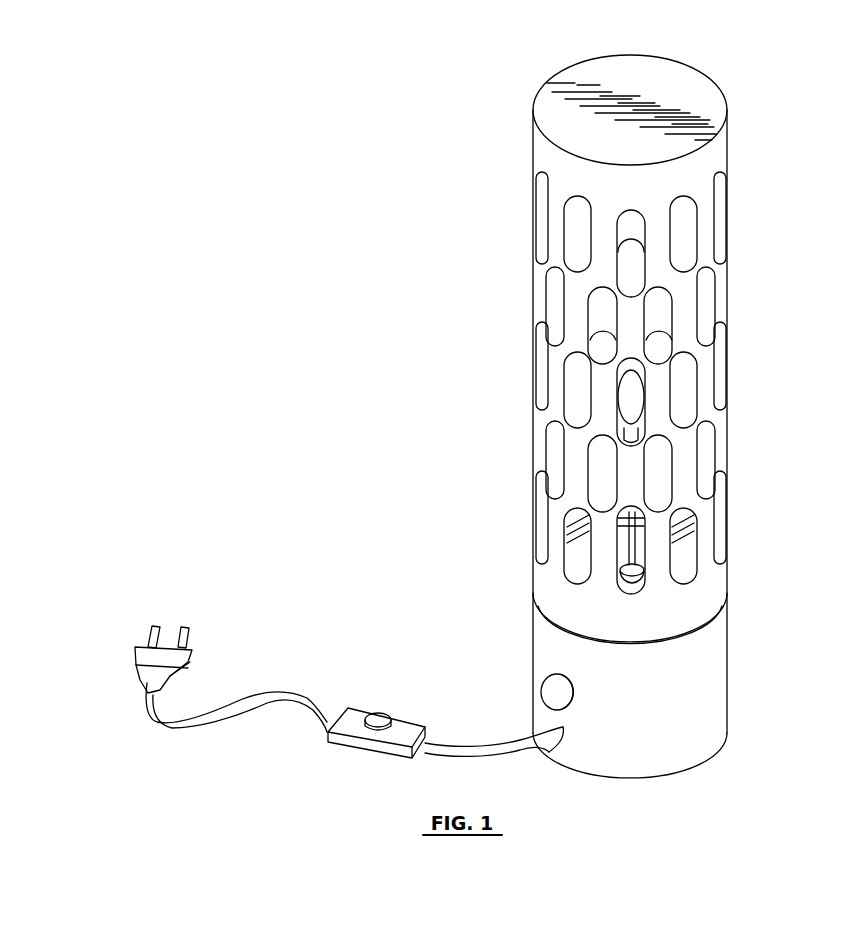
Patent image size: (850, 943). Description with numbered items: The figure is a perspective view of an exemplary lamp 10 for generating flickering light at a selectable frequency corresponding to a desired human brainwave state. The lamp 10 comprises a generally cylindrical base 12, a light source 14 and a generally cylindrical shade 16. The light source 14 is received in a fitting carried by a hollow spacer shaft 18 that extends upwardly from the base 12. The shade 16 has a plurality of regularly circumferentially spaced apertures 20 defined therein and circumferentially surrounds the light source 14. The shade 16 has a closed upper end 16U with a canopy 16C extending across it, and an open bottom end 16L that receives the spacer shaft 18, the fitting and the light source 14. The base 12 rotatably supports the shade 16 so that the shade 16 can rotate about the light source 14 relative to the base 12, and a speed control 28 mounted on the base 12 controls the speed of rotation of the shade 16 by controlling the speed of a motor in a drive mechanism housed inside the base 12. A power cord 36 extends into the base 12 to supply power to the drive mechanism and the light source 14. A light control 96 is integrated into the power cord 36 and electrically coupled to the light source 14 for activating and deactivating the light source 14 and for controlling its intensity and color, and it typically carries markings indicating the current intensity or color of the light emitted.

The lamp 10 is at (344, 293).
The base 12 is at (735, 679).
The light source 14 is at (632, 400).
The shade 16 is at (731, 295).
The closed upper end 16U is at (530, 98).
The canopy 16C is at (668, 96).
The open bottom end 16L is at (525, 580).
The hollow spacer shaft 18 is at (632, 541).
The apertures 20 is at (573, 218).
The speed control 28 is at (552, 694).
The power cord 36 is at (492, 746).
The light control 96 is at (378, 718).